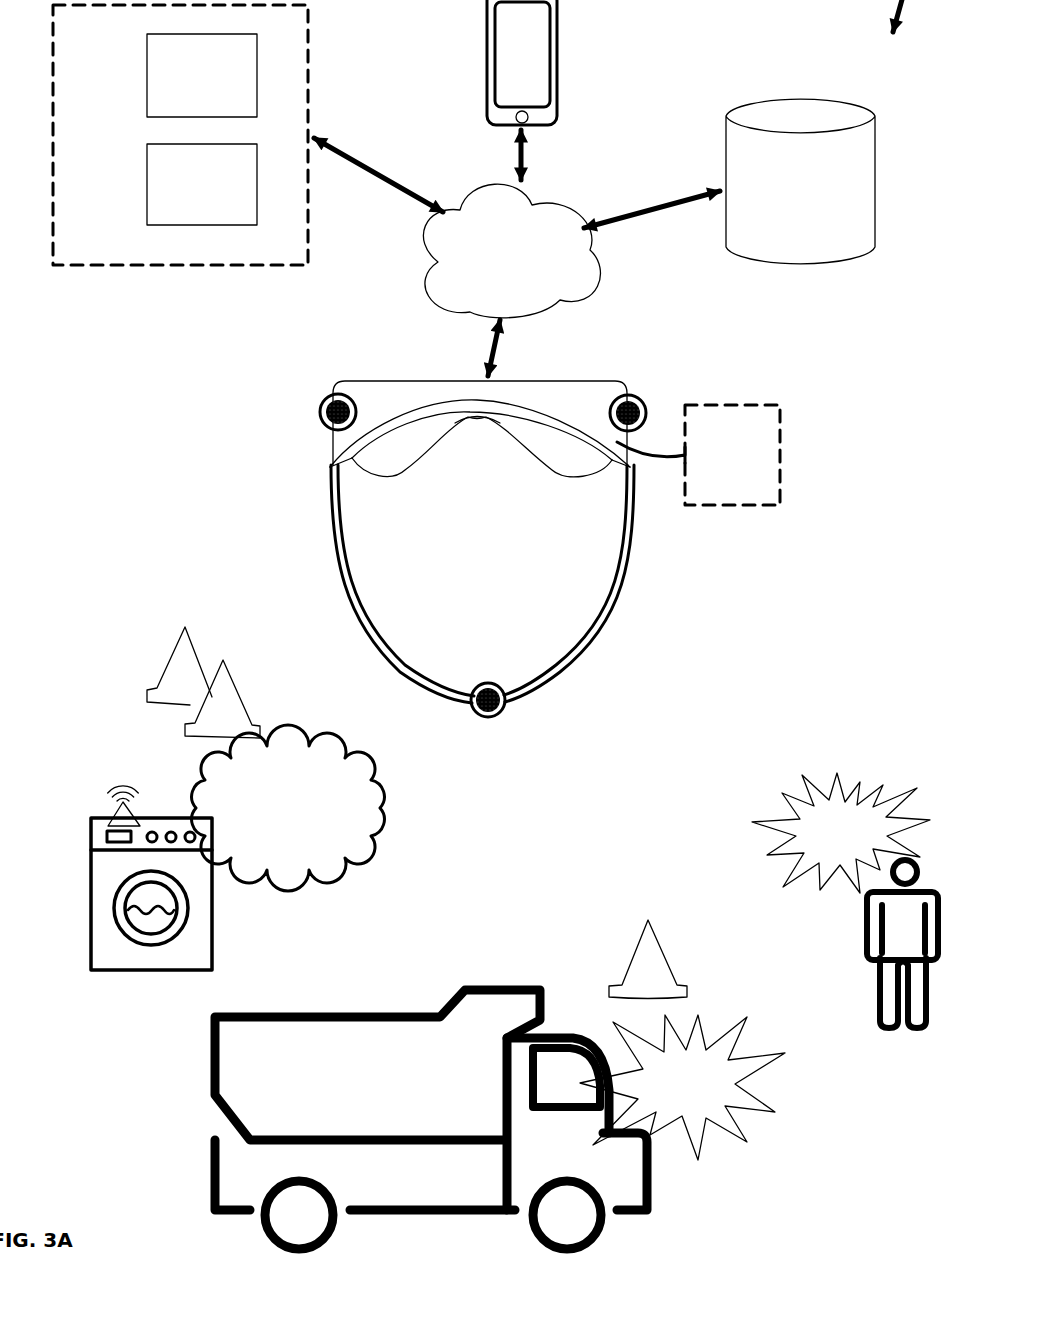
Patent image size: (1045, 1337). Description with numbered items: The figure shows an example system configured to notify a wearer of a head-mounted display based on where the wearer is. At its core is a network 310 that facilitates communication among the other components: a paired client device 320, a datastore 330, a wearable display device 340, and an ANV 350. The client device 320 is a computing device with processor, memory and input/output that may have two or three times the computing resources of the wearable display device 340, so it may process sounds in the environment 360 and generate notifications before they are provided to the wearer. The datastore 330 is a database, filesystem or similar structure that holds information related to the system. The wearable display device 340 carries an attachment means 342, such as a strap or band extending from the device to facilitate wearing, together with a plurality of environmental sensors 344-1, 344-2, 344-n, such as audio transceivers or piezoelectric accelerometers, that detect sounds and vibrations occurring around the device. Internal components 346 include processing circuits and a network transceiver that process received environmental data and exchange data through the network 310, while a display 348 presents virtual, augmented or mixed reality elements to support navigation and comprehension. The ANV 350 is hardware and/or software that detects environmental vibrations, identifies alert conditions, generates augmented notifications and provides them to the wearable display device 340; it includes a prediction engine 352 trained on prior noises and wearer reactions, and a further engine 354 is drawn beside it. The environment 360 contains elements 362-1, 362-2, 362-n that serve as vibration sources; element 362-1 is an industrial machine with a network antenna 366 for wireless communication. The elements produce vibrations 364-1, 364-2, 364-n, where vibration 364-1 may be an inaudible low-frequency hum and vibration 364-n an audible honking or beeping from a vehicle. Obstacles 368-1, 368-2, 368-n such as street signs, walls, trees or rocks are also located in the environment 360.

The network 310 is at (492, 273).
The client device 320 is at (558, 57).
The datastore 330 is at (782, 214).
The wearable display device 340 is at (578, 388).
The attachment means 342 is at (585, 668).
The environmental sensor 344-1 is at (321, 399).
The environmental sensor 344-2 is at (640, 399).
The environmental sensor 344-n is at (509, 704).
The internal components 346 is at (714, 466).
The display 348 is at (481, 444).
The ANV 350 is at (77, 81).
The prediction engine 352 is at (184, 99).
The communication engine (CE) 354 is at (184, 206).
The environment 360 is at (80, 577).
The element 362-1 is at (147, 957).
The element 362-2 is at (867, 930).
The element 362-n is at (415, 1045).
The vibration 364-1 is at (259, 811).
The vibration 364-2 is at (821, 848).
The vibration 364-n is at (654, 1091).
The network antenna 366 is at (112, 812).
The obstacle 368-1 is at (190, 665).
The obstacle 368-2 is at (240, 725).
The obstacle 368-n is at (650, 962).